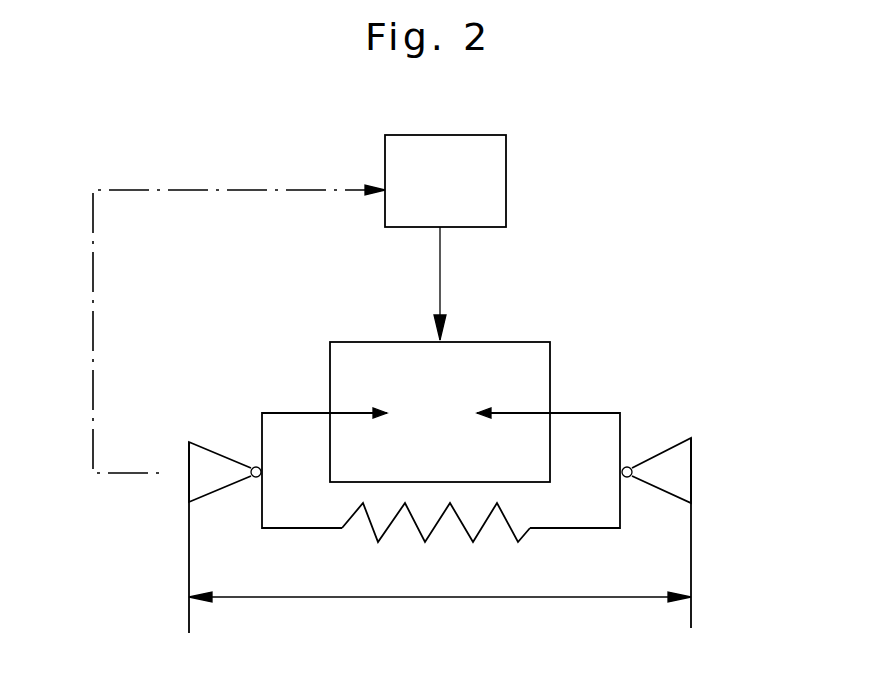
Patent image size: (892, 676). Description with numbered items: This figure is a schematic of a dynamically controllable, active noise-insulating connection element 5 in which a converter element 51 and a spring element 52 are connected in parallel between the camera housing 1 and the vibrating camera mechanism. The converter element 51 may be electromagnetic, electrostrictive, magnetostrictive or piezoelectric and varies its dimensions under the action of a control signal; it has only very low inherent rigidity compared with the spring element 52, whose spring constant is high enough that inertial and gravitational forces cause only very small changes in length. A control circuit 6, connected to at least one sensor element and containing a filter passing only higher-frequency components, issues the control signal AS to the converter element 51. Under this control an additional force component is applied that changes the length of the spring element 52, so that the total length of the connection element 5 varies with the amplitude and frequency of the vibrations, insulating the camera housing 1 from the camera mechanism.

The camera housing 1 is at (482, 598).
The active noise-insulating connection element 5 is at (474, 458).
The control circuit 6 is at (492, 182).
The converter element 51 is at (530, 353).
The spring element 52 is at (458, 525).
The control signal AS is at (440, 275).